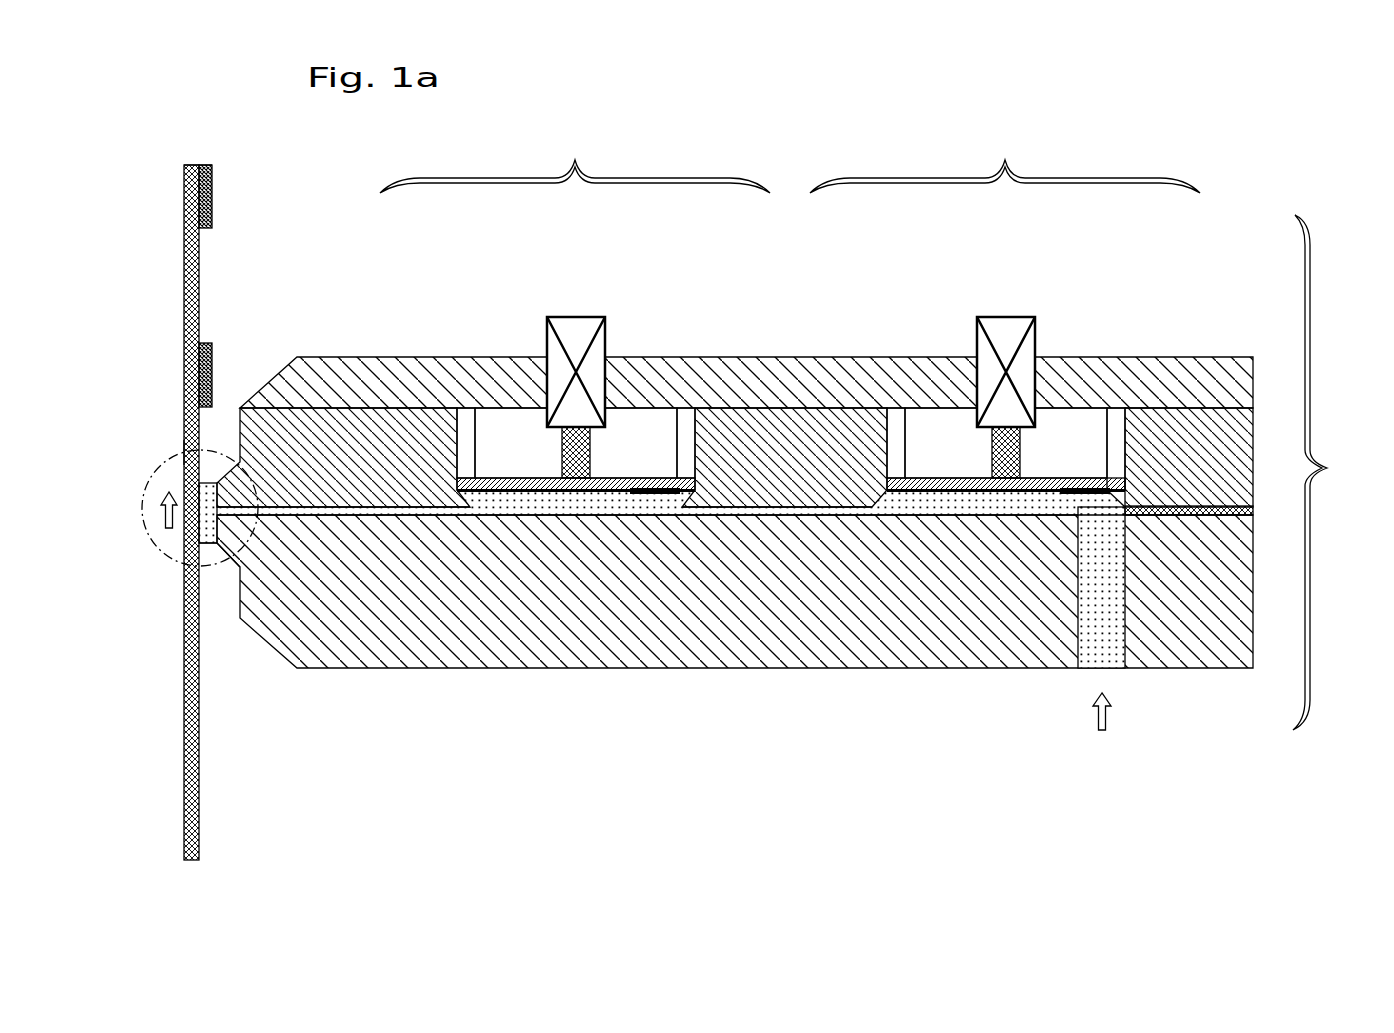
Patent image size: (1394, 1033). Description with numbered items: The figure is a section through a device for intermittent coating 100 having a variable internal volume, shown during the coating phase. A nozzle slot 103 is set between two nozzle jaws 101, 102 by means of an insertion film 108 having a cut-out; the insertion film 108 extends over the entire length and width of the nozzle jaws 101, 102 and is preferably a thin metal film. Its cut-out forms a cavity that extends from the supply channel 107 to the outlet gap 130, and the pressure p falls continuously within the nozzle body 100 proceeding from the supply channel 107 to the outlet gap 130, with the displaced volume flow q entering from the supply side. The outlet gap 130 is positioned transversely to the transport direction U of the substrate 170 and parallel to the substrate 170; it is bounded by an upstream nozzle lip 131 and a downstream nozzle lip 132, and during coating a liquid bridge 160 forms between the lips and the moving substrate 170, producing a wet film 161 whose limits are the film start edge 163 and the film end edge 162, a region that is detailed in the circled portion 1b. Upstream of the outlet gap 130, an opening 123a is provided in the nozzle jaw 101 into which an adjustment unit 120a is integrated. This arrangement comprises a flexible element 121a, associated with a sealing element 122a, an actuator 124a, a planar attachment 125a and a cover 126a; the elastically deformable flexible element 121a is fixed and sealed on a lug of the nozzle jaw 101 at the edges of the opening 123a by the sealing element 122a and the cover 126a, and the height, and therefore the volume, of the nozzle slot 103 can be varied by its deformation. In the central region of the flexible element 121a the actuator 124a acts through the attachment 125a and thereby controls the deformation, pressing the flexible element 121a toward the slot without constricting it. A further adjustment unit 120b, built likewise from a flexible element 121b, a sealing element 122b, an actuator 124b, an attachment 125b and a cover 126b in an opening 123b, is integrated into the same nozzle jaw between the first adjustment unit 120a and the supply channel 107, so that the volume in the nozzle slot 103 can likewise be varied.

The device for intermittent coating 100 is at (1335, 472).
The nozzle jaw 101 is at (735, 542).
The nozzle jaw 102 is at (735, 672).
The nozzle slot 103 is at (735, 642).
The supply channel 107 is at (1066, 614).
The insertion film 108 is at (1253, 512).
The adjustment unit 120a is at (575, 157).
The further adjustment unit 120b is at (1005, 157).
The flexible element 121a is at (540, 392).
The flexible element 121b is at (970, 392).
The sealing element 122a is at (612, 372).
The sealing element 122b is at (1042, 372).
The opening 123a is at (540, 378).
The opening 123b is at (970, 378).
The actuator 124a is at (495, 319).
The actuator 124b is at (925, 319).
The planar attachment 125a is at (665, 344).
The planar attachment 125b is at (1095, 344).
The cover 126a is at (612, 386).
The cover 126b is at (1042, 392).
The outlet gap 130 is at (200, 540).
The upstream nozzle lip 131 is at (183, 452).
The downstream nozzle lip 132 is at (202, 547).
The liquid bridge 160 is at (183, 497).
The wet film 161 is at (212, 202).
The film end edge 162 is at (213, 230).
The film start edge 163 is at (213, 167).
The substrate 170 is at (199, 789).
The detail region of Fig. 1b is at (163, 467).
The movement direction of the substrate U is at (159, 512).
The pressure p is at (1108, 652).
The displaced volume flow q is at (1111, 717).